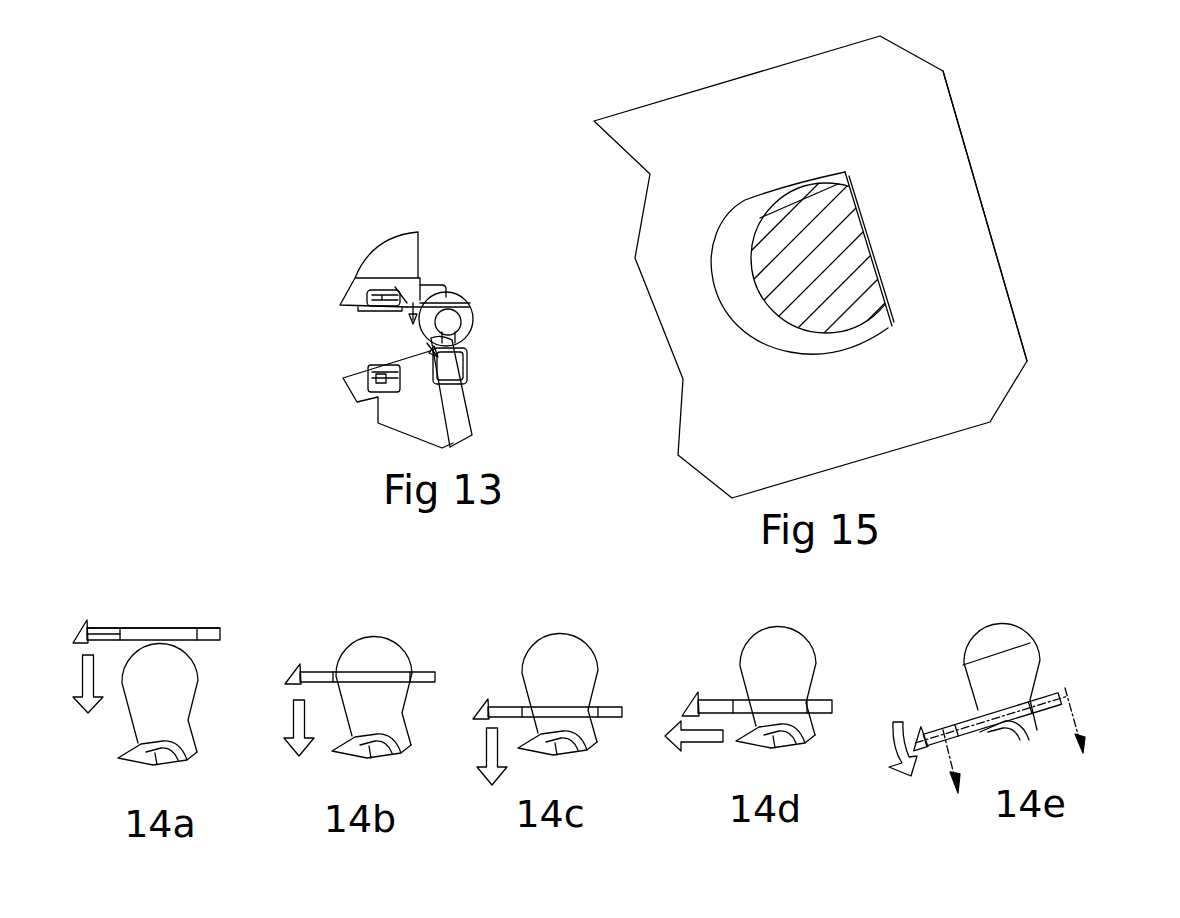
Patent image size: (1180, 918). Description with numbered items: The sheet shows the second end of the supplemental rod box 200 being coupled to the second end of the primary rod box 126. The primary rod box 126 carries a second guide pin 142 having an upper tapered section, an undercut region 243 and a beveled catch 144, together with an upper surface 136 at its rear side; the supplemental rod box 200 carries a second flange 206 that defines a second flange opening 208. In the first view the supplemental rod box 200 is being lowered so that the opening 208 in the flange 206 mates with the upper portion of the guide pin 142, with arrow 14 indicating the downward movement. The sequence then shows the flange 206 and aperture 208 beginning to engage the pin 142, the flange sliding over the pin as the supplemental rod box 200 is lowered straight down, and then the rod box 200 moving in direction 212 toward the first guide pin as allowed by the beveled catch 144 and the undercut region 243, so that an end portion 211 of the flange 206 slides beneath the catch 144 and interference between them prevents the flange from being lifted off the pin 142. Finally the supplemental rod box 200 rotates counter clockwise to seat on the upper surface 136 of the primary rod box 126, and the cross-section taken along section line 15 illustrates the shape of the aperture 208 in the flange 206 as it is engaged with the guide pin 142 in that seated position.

In FIG. 13, the section arrows 14 is at (418, 330).
In FIG. 14E, the section line 15 is at (1018, 746).
In FIG. 13, the primary rod box 126 is at (521, 381).
In FIG. 14A, the upper surface 136 is at (130, 757).
In FIG. 14D, the upper surface 136 is at (747, 745).
In FIG. 13, the second guide pin 142 is at (460, 317).
In FIG. 14A, the second guide pin 142 is at (185, 668).
In FIG. 13, the catch 144 is at (458, 330).
In FIG. 15, the catch 144 is at (869, 244).
In FIG. 14D, the catch 144 is at (810, 690).
In FIG. 14E, the catch 144 is at (1037, 678).
In FIG. 13, the supplemental rod box 200 is at (443, 266).
In FIG. 14A, the supplemental rod box 200 is at (145, 612).
In FIG. 13, the second flange 206 is at (467, 303).
In FIG. 15, the second flange 206 is at (896, 125).
In FIG. 14A, the second flange 206 is at (107, 628).
In FIG. 15, the second flange opening 208 is at (732, 250).
In FIG. 14A, the second flange opening 208 is at (158, 633).
In FIG. 15, the end portion 211 is at (994, 262).
In FIG. 14C, the end portion 211 is at (610, 702).
In FIG. 14D, the direction 212 is at (683, 747).
In FIG. 13, the undercut region 243 is at (462, 348).